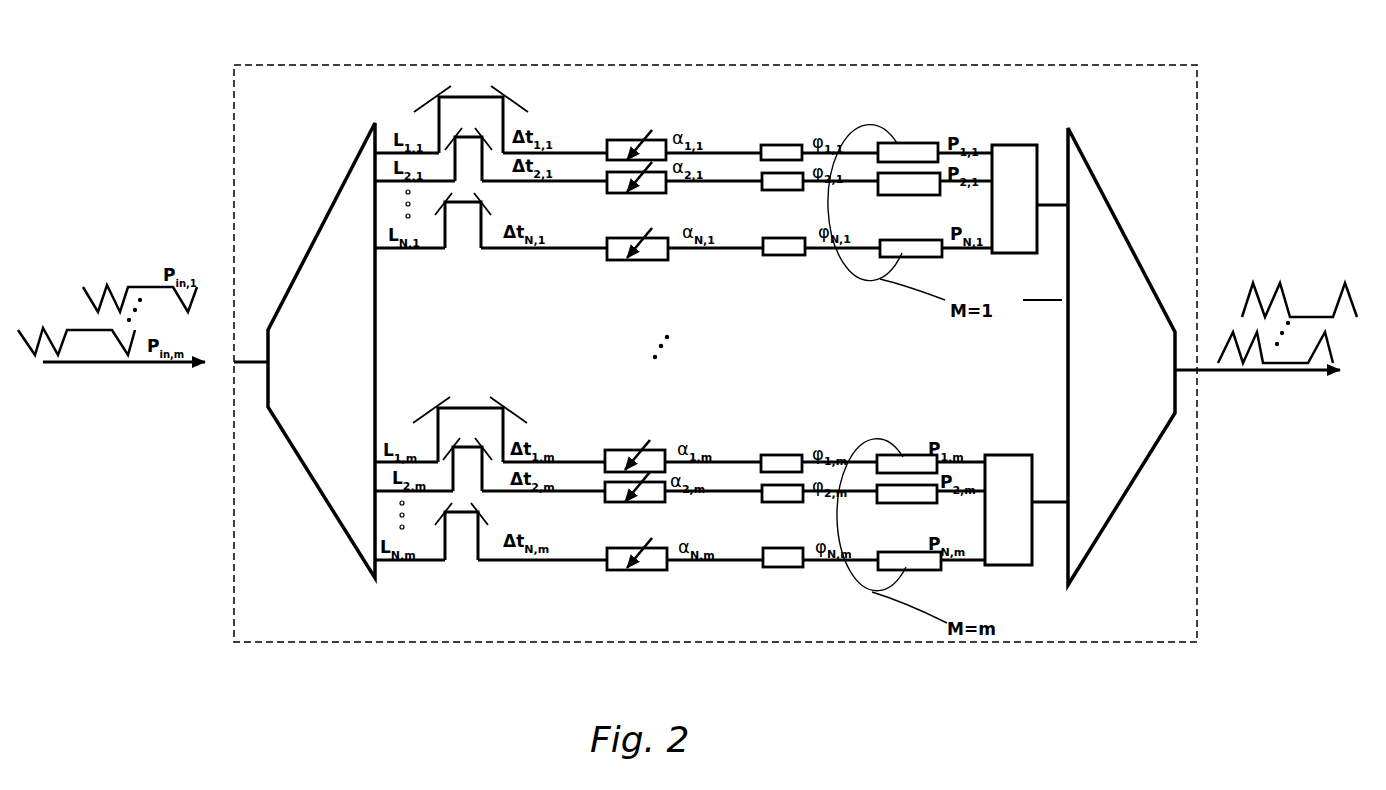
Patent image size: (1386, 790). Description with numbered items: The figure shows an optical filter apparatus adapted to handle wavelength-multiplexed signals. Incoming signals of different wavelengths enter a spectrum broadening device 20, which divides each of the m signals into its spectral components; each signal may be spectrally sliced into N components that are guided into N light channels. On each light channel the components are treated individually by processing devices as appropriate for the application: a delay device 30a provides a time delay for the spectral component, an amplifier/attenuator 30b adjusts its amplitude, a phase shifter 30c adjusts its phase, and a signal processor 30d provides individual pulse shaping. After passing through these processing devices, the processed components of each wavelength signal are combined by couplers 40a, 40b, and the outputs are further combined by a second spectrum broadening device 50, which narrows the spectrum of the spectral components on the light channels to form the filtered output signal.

The spectrum broadening device 20 is at (331, 236).
The delay device 30a is at (415, 73).
The amplifier/attenuator 30b is at (603, 122).
The phase shifter 30c is at (757, 133).
The signal processor 30d is at (983, 122).
The coupler 40a is at (1012, 150).
The coupler 40b is at (995, 458).
The second spectrum broadening device 50 is at (1100, 213).